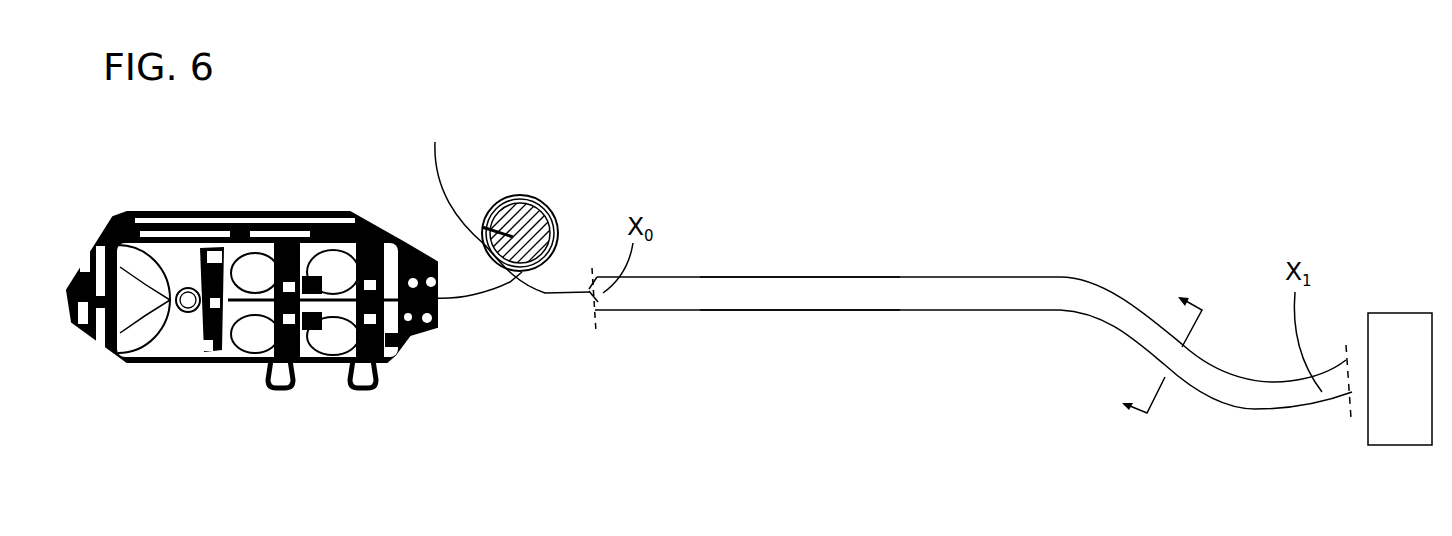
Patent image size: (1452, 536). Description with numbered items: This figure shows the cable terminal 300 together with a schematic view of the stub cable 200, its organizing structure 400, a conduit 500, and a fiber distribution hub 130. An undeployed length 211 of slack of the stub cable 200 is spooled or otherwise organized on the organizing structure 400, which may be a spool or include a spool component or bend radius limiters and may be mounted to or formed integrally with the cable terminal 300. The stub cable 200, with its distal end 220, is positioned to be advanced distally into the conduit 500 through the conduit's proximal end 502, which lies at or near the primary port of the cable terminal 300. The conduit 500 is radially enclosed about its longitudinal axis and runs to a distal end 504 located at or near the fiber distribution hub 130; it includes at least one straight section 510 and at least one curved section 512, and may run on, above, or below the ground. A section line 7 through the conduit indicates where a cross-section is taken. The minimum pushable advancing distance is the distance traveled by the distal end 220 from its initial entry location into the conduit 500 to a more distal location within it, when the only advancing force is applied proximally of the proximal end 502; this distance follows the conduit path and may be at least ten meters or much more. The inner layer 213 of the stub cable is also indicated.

The cable terminal 300 is at (186, 178).
The stub cable 200 is at (533, 290).
The organizing structure 400 is at (501, 204).
The undeployed length 211 is at (526, 195).
The inner tube layer 213 is at (557, 295).
The proximal end of the conduit 502 is at (594, 268).
The distal end of the stub cable 220 is at (600, 300).
The conduit 500 is at (788, 277).
The straight section 510 is at (803, 322).
The curved section 512 is at (1114, 276).
The section line 7 is at (1155, 343).
The distal end of the conduit 504 is at (1352, 392).
The fiber distribution hub 130 is at (1392, 313).